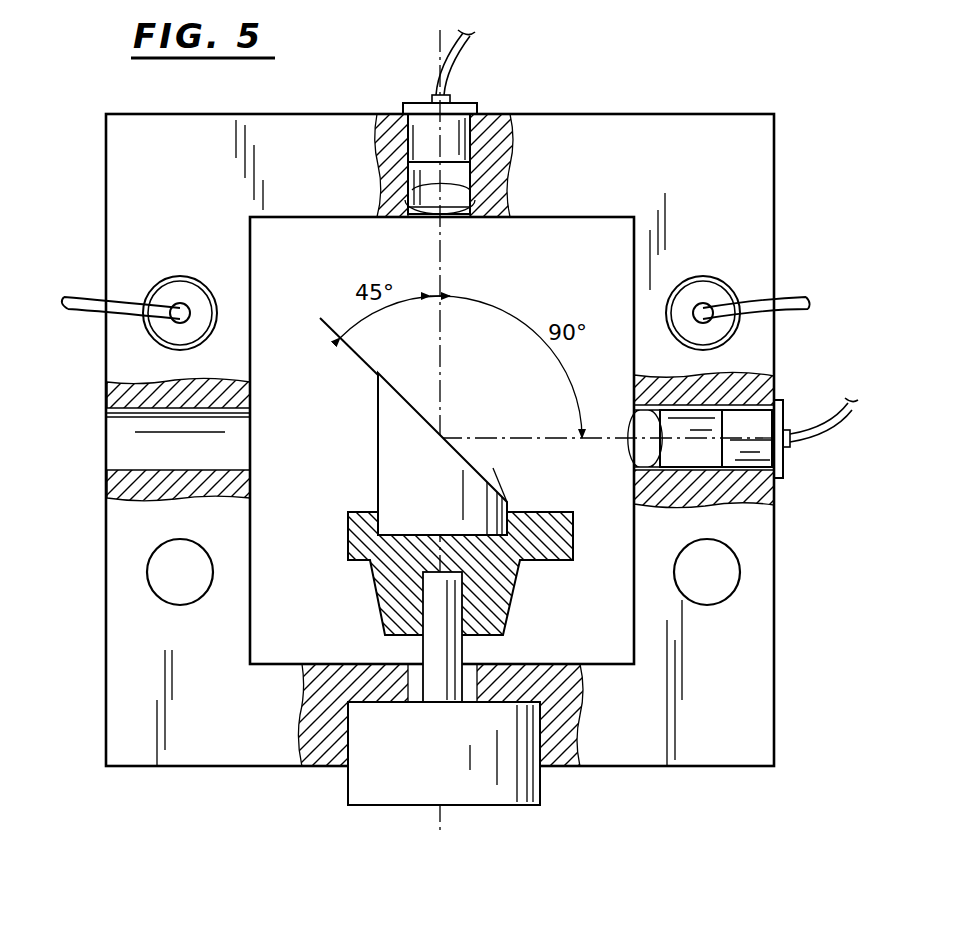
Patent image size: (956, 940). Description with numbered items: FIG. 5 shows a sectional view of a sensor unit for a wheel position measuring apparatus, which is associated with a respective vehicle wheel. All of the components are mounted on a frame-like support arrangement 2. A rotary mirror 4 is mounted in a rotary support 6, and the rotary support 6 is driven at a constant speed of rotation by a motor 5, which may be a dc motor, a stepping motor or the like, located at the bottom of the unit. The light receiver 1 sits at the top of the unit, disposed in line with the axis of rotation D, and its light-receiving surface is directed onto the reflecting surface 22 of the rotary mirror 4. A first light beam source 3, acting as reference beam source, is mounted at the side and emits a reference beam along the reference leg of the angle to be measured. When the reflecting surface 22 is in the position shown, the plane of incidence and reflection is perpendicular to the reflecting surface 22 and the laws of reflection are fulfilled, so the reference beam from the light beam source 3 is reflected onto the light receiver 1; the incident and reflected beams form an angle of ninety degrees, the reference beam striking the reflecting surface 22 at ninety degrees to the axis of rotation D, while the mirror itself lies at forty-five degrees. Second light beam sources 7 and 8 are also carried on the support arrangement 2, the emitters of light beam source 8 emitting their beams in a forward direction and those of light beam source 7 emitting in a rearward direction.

The light receiver 1 is at (423, 133).
The frame-like support arrangement 2 is at (667, 162).
The first light beam source 3 is at (755, 477).
The rotary mirror 4 is at (413, 463).
The motor 5 is at (397, 768).
The rotary support 6 is at (392, 565).
The second light beam source 7 is at (160, 572).
The second light beam source 8 is at (160, 322).
The reflecting surface 22 is at (493, 468).
The axis of rotation D is at (441, 272).